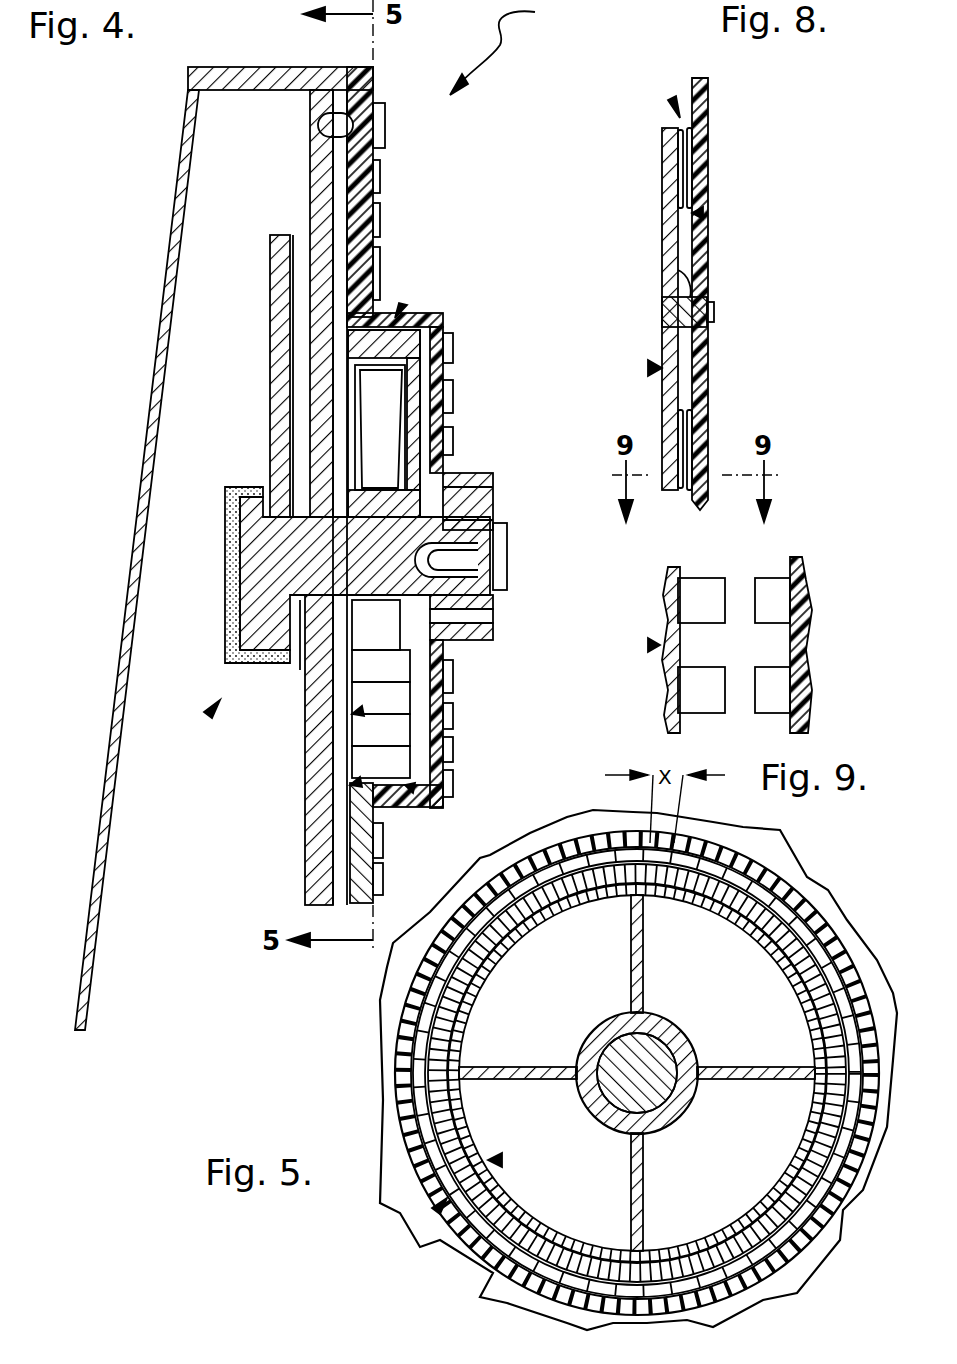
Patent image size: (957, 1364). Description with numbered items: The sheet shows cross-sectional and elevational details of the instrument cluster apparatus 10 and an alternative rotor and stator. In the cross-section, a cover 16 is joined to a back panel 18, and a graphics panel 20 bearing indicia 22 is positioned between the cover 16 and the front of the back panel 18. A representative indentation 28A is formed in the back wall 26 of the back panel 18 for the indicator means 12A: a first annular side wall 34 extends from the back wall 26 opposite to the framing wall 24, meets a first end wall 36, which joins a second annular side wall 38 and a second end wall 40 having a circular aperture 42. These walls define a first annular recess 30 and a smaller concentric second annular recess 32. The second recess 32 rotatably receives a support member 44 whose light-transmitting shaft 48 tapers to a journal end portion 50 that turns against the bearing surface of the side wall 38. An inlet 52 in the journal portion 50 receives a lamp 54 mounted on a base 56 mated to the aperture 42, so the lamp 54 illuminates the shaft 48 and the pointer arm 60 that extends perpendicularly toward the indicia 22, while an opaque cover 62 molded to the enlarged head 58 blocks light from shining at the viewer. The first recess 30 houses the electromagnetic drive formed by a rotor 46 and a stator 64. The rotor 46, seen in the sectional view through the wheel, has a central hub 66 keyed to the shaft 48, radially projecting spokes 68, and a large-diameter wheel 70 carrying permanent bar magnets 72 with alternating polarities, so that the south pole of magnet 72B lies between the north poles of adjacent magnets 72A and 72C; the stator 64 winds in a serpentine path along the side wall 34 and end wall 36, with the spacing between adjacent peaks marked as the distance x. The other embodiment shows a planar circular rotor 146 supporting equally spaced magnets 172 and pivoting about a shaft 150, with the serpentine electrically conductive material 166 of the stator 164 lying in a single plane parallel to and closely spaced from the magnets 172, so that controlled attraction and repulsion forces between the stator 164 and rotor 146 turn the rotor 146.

In FIG. 4, the instrument cluster apparatus 10 is at (492, 47).
In FIG. 4, the indicator means 12A is at (212, 712).
In FIG. 4, the cover 16 is at (178, 163).
In FIG. 4, the back panel 18 is at (350, 66).
In FIG. 4, the graphics panel 20 is at (350, 903).
In FIG. 4, the indicia 22 is at (308, 858).
In FIG. 4, the framing wall 24 is at (250, 66).
In FIG. 4, the back wall 26 is at (331, 178).
In FIG. 5, the back wall 26 is at (832, 912).
In FIG. 4, the indentation 28A is at (352, 784).
In FIG. 4, the first annular recess 30 is at (412, 413).
In FIG. 4, the second annular recess 32 is at (468, 490).
In FIG. 4, the first annular side wall 34 is at (412, 316).
In FIG. 5, the first annular side wall 34 is at (802, 880).
In FIG. 4, the first end wall 36 is at (432, 376).
In FIG. 8, the first end wall 36 is at (710, 95).
In FIG. 9, the first end wall 36 is at (806, 626).
In FIG. 4, the second annular side wall 38 is at (455, 476).
In FIG. 4, the second end wall 40 is at (486, 517).
In FIG. 4, the circular aperture 42 is at (486, 532).
In FIG. 4, the support member 44 is at (298, 668).
In FIG. 4, the rotor 46 is at (352, 714).
In FIG. 5, the rotor 46 is at (500, 1160).
In FIG. 4, the shaft 48 is at (376, 625).
In FIG. 5, the shaft 48 is at (668, 1052).
In FIG. 4, the journal end portion 50 is at (494, 640).
In FIG. 4, the inlet 52 is at (494, 619).
In FIG. 4, the lamp 54 is at (494, 601).
In FIG. 4, the base 56 is at (508, 546).
In FIG. 4, the enlarged head 58 is at (252, 578).
In FIG. 4, the pointer arm 60 is at (270, 342).
In FIG. 4, the cover 62 is at (232, 548).
In FIG. 4, the stator 64 is at (398, 308).
In FIG. 5, the stator 64 is at (438, 1208).
In FIG. 5, the hub 66 is at (660, 1030).
In FIG. 5, the spokes 68 is at (631, 965).
In FIG. 5, the wheel 70 is at (500, 952).
In FIG. 5, the permanent bar magnets 72 is at (742, 850).
In FIG. 4, the magnet 72A is at (440, 714).
In FIG. 4, the magnet 72B is at (440, 744).
In FIG. 4, the magnet 72C is at (440, 772).
In FIG. 8, the rotor 146 is at (650, 368).
In FIG. 9, the rotor 146 is at (650, 645).
In FIG. 8, the shaft 150 is at (672, 268).
In FIG. 8, the stator 164 is at (672, 100).
In FIG. 8, the electrically conductive material 166 is at (704, 213).
In FIG. 9, the electrically conductive material 166 is at (775, 578).
In FIG. 8, the magnets 172 is at (673, 213).
In FIG. 9, the magnets 172 is at (726, 555).